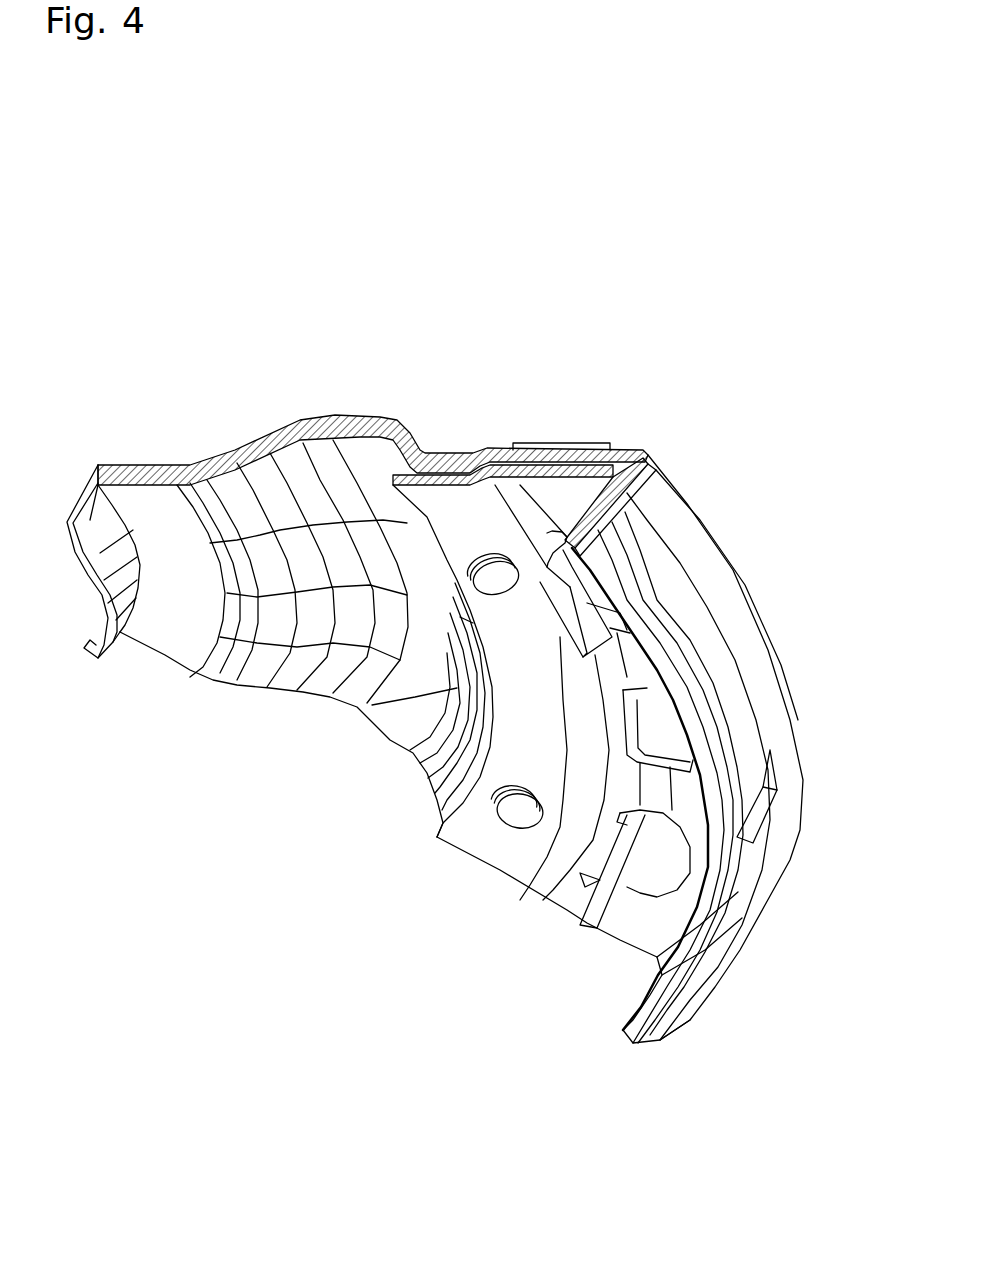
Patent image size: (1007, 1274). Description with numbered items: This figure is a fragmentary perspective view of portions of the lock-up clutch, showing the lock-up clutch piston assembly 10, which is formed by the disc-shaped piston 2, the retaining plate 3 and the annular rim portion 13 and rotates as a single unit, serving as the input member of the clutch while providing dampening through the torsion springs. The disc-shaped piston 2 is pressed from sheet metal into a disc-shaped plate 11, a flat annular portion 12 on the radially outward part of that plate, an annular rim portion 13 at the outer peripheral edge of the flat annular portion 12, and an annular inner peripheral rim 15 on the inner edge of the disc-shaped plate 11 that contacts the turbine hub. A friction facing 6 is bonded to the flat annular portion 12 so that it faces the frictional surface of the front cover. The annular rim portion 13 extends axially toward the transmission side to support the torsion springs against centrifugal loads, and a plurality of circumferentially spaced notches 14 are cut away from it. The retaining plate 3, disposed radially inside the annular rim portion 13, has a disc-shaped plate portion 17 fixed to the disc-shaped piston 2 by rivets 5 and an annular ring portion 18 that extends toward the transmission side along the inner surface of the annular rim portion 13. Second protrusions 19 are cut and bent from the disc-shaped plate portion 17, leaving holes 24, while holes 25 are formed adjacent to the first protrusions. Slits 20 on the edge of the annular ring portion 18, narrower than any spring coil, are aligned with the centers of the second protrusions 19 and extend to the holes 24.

The disc-shaped piston 2 is at (373, 373).
The retaining plate 3 is at (492, 757).
The rivets 5 is at (482, 759).
The friction facing 6 is at (608, 443).
The lock-up clutch piston assembly 10 is at (509, 260).
The disc-shaped plate 11 is at (277, 563).
The flat annular portion 12 is at (561, 375).
The annular rim portion 13 is at (715, 710).
The notches 14 is at (730, 777).
The annular inner peripheral rim 15 is at (92, 470).
The disc-shaped plate portion 17 is at (503, 416).
The annular ring portion 18 is at (597, 476).
The second protrusions 19 is at (546, 788).
The slits 20 is at (683, 781).
The holes 24 is at (629, 915).
The holes 25 is at (728, 694).